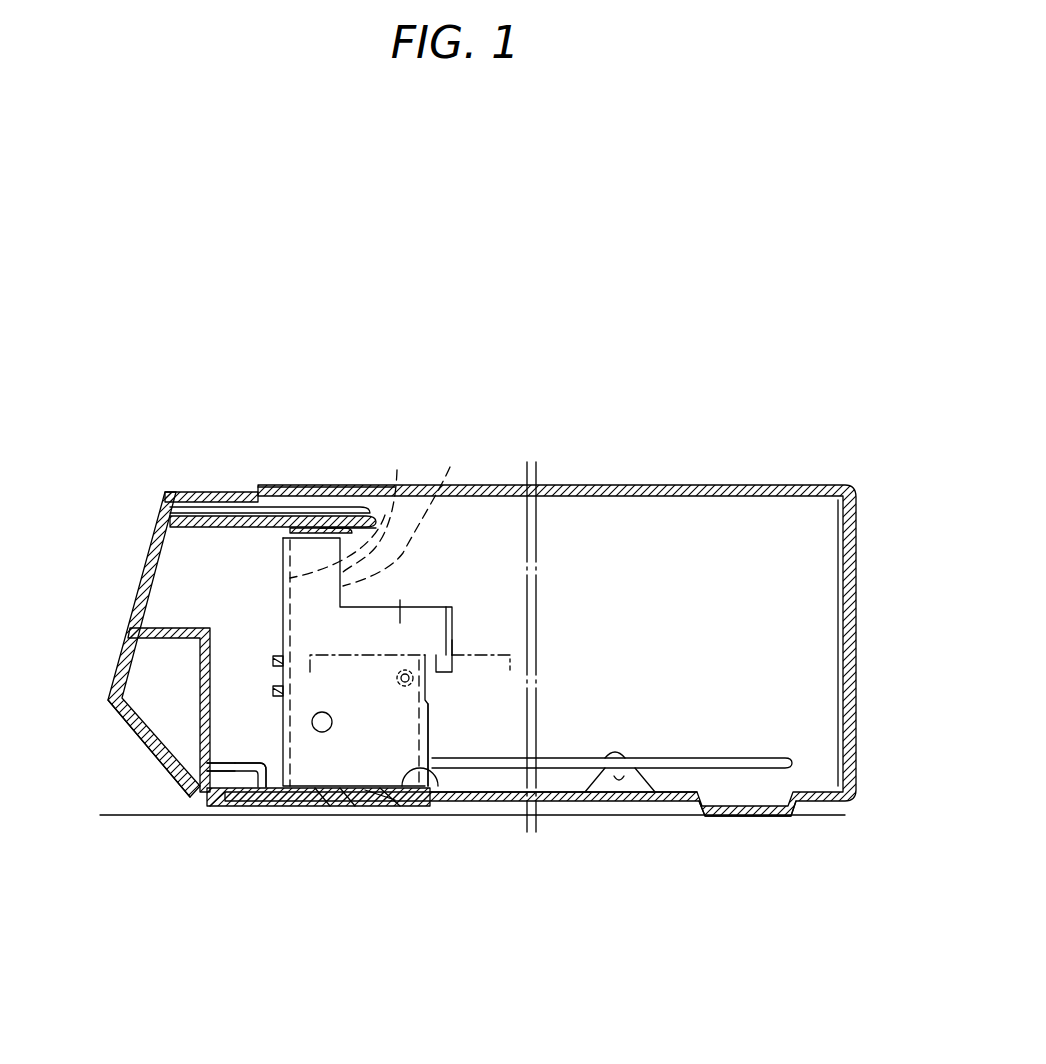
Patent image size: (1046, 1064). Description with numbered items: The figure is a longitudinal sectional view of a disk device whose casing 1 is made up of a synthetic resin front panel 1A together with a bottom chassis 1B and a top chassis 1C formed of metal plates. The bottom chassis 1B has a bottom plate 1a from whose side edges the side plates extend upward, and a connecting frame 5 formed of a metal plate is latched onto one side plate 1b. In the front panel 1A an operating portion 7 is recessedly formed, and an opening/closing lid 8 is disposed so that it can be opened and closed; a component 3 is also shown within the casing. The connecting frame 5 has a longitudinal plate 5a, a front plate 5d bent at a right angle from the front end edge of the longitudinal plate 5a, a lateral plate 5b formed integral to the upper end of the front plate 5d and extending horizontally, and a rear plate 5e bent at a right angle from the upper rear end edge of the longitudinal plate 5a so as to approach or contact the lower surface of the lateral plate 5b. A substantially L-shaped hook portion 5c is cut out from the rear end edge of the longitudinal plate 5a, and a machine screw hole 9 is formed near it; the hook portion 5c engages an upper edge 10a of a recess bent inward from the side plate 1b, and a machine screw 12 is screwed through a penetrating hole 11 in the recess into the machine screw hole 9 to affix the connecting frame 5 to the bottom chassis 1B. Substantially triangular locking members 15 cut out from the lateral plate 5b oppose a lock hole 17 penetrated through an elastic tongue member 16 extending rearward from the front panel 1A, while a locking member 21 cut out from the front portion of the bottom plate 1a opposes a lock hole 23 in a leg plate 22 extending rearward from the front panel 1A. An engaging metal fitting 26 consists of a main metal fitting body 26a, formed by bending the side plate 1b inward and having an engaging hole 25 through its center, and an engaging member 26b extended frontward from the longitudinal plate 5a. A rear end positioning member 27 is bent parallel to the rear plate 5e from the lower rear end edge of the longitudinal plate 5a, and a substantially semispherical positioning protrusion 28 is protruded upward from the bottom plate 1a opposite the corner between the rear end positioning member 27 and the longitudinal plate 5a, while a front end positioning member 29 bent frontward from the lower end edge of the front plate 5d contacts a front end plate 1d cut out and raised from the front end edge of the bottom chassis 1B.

The casing 1 is at (688, 466).
The front panel 1A is at (150, 522).
The bottom chassis 1B is at (573, 806).
The top chassis 1C is at (738, 484).
The bottom plate 1a is at (680, 816).
The side plate 1b is at (510, 670).
The front end plate 1d is at (223, 797).
The circuit board 3 is at (737, 767).
The connecting frame 5 is at (620, 362).
The longitudinal plate 5a is at (400, 623).
The lateral plate 5b is at (385, 505).
The hook portion 5c is at (446, 607).
The front plate 5d is at (397, 470).
The rear plate 5e is at (450, 467).
The operating portion 7 is at (170, 662).
The opening/closing lid 8 is at (143, 747).
The machine screw hole 9 is at (396, 678).
The upper edge 10a is at (462, 657).
The penetrating hole 11 is at (393, 678).
The machine screw 12 is at (407, 687).
The locking member 15 is at (330, 513).
The elastic tongue member 16 is at (207, 523).
The lock hole 17 is at (307, 488).
The locking member 21 is at (347, 813).
The leg plate 22 is at (400, 813).
The lock hole 23 is at (330, 813).
The engaging hole 25 is at (273, 668).
The engaging metal fitting 26 is at (225, 885).
The main metal fitting body 26a is at (227, 790).
The engaging member 26b is at (153, 783).
The rear end positioning member 27 is at (427, 737).
The positioning protrusion 28 is at (450, 787).
The front end positioning member 29 is at (283, 740).